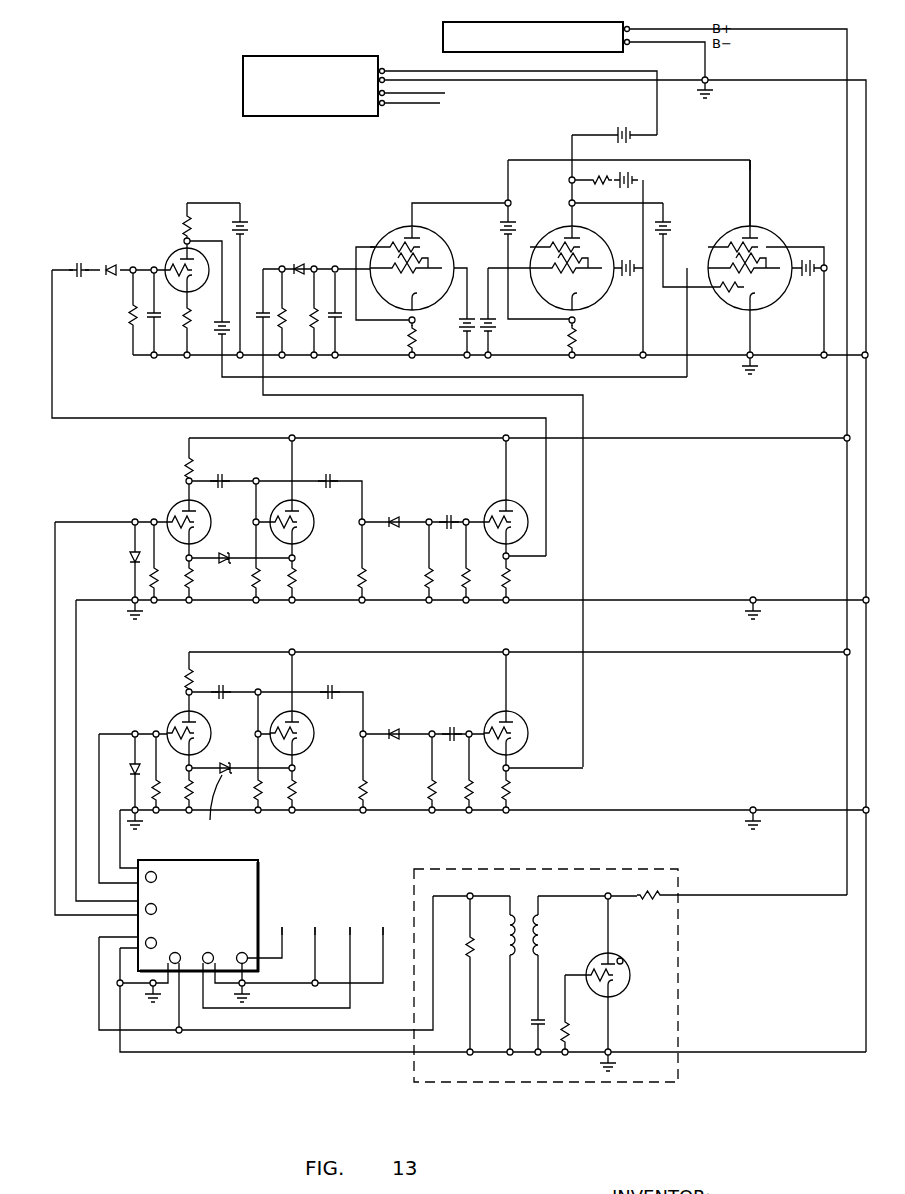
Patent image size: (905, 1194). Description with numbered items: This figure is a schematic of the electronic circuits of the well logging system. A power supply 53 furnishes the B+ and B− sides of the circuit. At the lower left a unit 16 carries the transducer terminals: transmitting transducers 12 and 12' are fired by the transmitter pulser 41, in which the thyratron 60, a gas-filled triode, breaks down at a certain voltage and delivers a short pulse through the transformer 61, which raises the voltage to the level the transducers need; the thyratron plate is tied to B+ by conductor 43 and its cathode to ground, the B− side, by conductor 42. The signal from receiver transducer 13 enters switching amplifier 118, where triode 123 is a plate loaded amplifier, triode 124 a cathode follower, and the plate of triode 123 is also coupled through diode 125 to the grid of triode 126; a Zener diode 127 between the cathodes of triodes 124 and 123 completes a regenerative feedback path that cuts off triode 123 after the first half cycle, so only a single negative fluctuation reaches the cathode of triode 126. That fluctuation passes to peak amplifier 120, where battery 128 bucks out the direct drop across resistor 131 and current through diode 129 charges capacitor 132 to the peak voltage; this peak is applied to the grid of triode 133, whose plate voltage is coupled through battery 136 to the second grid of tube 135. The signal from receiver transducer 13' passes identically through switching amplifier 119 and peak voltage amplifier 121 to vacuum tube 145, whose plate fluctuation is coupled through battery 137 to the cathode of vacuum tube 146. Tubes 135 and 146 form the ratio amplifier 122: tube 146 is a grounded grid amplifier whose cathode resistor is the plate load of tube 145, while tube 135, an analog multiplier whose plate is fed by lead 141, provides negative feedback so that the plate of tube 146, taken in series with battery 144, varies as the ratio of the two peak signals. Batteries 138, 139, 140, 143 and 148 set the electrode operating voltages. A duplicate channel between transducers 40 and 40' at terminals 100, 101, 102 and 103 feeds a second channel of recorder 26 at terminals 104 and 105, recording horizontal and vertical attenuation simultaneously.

The recorder 26 is at (314, 56).
The power supply 53 is at (443, 44).
The terminal 104 is at (440, 88).
The terminal 105 is at (440, 104).
The peak amplifier 120 is at (440, 381).
The peak voltage amplifier 121 is at (562, 433).
The amplifier stage 122 is at (766, 156).
The battery 128 is at (74, 263).
The diode 129 is at (111, 261).
The triode 133 is at (168, 257).
The resistor 131 is at (128, 321).
The capacitor 132 is at (150, 332).
The battery 136 is at (214, 358).
The battery 144 is at (625, 126).
The vacuum tube 145 is at (442, 234).
The vacuum tube 146 is at (592, 236).
The vacuum tube 135 is at (777, 235).
The battery 137 is at (461, 328).
The battery 143 is at (506, 330).
The battery 139 is at (625, 282).
The battery 140 is at (680, 229).
The battery 138 is at (632, 176).
The conductor 141 is at (752, 190).
The battery 148 is at (805, 283).
The switching amplifier circuit 118 is at (462, 675).
The switching amplifier circuit 119 is at (608, 734).
The triode 123 is at (169, 508).
The triode 124 is at (315, 510).
The diode 125 is at (390, 514).
The triode 126 is at (489, 505).
The Zener diode 127 is at (191, 605).
The conductor 42 is at (866, 553).
The conductor 43 is at (845, 497).
The switch unit 16 is at (482, 943).
The receiver transducer 13' is at (169, 881).
The receiver transducer 13 is at (167, 909).
The transmitting transducer 12 is at (167, 934).
The transmitting transducer 12' is at (187, 948).
The transducer 40 is at (213, 948).
The transducer 40' is at (243, 948).
The terminal 100 is at (284, 928).
The terminal 101 is at (317, 928).
The terminal 102 is at (352, 928).
The terminal 103 is at (385, 928).
The transmitter pulser 41 is at (630, 975).
The transformer 61 is at (527, 910).
The gas-filled triode 60 is at (626, 952).